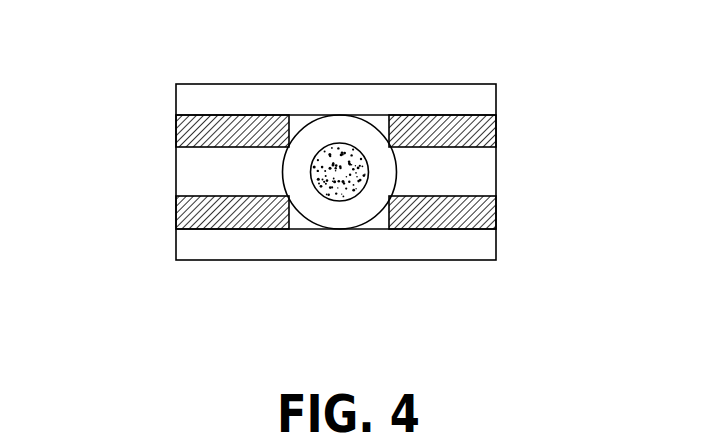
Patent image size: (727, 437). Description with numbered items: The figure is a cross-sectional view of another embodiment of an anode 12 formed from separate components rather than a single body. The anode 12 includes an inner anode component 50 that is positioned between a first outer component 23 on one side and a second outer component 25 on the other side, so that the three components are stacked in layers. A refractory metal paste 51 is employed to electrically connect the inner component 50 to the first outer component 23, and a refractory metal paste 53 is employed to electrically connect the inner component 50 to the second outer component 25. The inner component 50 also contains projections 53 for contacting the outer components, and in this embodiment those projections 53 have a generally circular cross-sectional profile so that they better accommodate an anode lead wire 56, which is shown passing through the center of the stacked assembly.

The anode 12 is at (107, 137).
The first outer component 23 is at (478, 90).
The second outer component 25 is at (488, 247).
The inner anode component 50 is at (483, 172).
The refractory metal paste 51 is at (225, 125).
The refractory metal paste 53 is at (339, 138).
The anode lead wire 56 is at (368, 174).